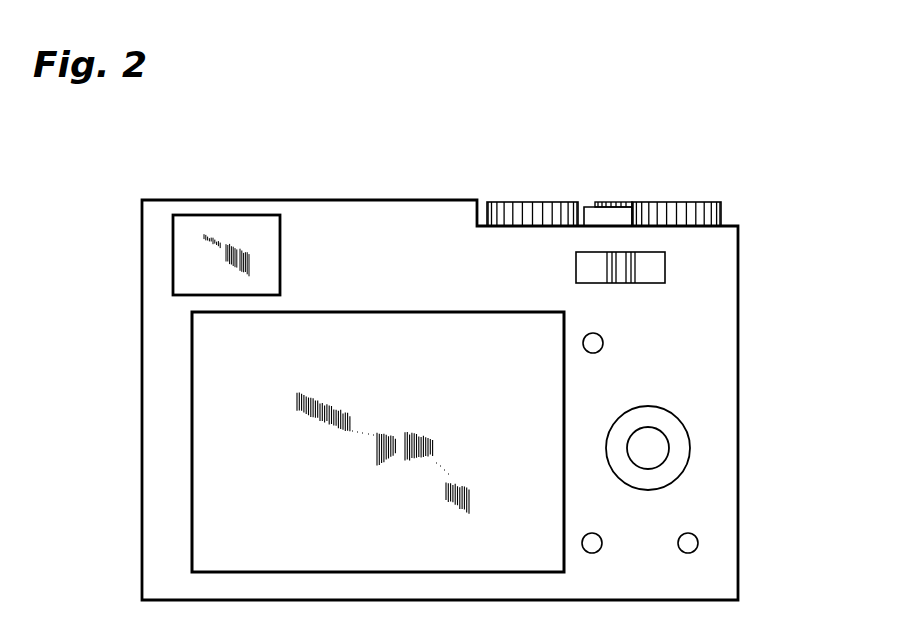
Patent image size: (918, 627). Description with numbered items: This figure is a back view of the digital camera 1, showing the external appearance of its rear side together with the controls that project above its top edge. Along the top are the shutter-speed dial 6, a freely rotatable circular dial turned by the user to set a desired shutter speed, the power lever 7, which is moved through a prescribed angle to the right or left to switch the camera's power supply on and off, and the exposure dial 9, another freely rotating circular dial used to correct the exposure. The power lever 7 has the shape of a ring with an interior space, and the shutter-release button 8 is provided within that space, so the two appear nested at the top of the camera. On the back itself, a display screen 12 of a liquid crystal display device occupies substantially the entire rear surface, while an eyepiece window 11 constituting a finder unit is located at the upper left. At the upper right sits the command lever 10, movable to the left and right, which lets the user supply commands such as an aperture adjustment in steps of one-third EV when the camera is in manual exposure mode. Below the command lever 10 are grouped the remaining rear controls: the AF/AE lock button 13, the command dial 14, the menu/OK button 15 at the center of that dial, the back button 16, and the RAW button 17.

The digital camera 1 is at (757, 143).
The shutter-speed dial 6 is at (528, 208).
The power lever 7 is at (590, 212).
The shutter-release button 8 is at (617, 200).
The exposure dial 9 is at (702, 205).
The command lever 10 is at (647, 272).
The eyepiece window 11 is at (275, 276).
The display screen 12 is at (415, 332).
The AF/AE lock button 13 is at (597, 344).
The command dial 14 is at (677, 430).
The menu/OK button 15 is at (652, 455).
The back button 16 is at (595, 547).
The RAW button 17 is at (685, 548).